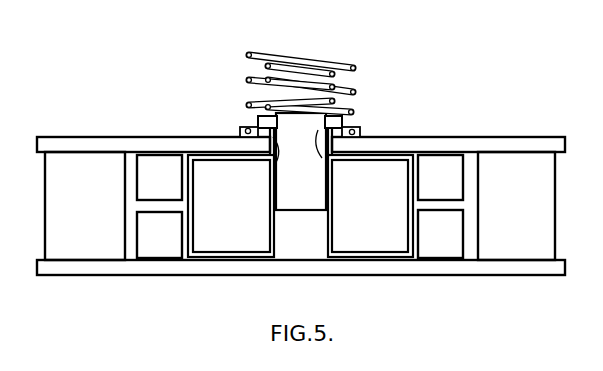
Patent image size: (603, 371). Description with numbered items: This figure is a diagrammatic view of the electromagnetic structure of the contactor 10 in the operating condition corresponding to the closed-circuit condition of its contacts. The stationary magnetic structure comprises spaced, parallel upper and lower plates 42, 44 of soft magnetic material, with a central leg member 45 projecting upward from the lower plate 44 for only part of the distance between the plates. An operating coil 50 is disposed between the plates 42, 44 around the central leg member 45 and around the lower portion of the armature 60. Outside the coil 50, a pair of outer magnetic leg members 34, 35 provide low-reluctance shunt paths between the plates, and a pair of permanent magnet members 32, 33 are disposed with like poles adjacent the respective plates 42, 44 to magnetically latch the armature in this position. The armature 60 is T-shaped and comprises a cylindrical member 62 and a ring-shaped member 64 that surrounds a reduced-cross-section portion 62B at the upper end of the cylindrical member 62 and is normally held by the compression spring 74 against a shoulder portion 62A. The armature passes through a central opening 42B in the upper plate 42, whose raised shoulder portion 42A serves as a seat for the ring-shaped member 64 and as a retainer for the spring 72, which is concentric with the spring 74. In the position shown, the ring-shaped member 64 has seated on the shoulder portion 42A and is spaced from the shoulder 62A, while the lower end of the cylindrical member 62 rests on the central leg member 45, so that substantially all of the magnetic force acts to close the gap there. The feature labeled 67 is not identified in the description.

The contactor 10 is at (120, 302).
The permanent magnet member 32 is at (53, 175).
The permanent magnet member 33 is at (550, 195).
The outer magnetic leg member 34 is at (143, 217).
The outer magnetic leg member 35 is at (458, 225).
The upper plate 42 is at (497, 143).
The shoulder portion 42A is at (356, 137).
The central opening 42B is at (275, 160).
The lower plate 44 is at (538, 268).
The central leg member 45 is at (328, 234).
The operating coil means 50 is at (192, 177).
The armature 60 is at (273, 200).
The cylindrical member 62 is at (282, 178).
The shoulder portion 62A is at (285, 127).
The portion of reduced cross-section 62B is at (346, 118).
The ring-shaped member 64 is at (259, 120).
The right air gap 67 is at (322, 158).
The spring 72 is at (338, 62).
The compression spring 74 is at (291, 60).